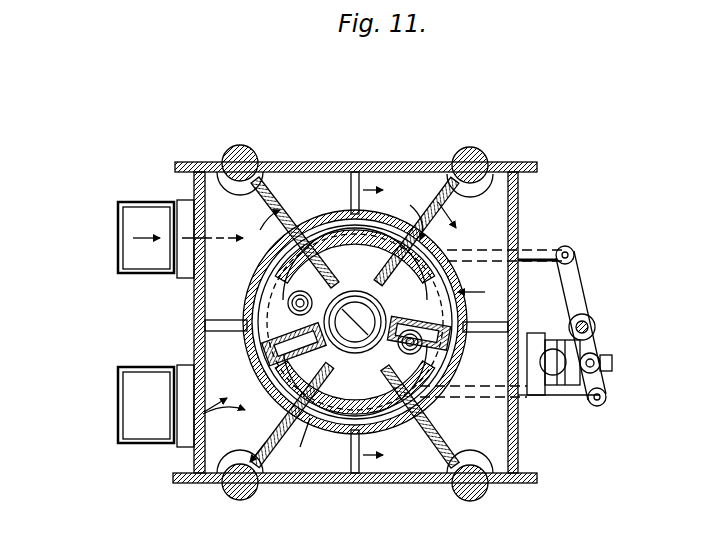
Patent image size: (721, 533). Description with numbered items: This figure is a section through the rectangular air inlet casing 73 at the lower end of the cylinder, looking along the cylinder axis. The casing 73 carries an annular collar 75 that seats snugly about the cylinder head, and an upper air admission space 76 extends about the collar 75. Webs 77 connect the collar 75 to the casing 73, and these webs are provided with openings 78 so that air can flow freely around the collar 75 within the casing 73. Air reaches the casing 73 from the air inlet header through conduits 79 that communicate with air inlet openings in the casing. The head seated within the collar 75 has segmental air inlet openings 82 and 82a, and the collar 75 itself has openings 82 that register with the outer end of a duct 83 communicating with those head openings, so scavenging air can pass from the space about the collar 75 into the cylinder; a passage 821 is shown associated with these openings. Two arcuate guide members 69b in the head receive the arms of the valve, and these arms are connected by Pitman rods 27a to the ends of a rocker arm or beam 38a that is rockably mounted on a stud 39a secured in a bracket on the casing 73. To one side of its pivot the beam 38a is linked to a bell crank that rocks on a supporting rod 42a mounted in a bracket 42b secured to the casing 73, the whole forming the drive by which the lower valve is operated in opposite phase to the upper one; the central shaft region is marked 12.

The shaft / flow path 12 is at (101, 228).
The annular collar 75 is at (378, 225).
The upper air admission space 76 is at (200, 293).
The webs 77 is at (292, 172).
The openings 78 is at (356, 193).
The conduits 79 is at (118, 268).
The segmental air inlet openings 82 is at (440, 298).
The valve block passage 821 is at (224, 394).
The segmental air inlet opening 82a is at (447, 252).
The duct 83 is at (200, 347).
The arcuate guide members 69b is at (356, 455).
The air inlet casing 73 is at (328, 484).
The Pitman rods 27a is at (535, 257).
The rocker arm or beam 38a is at (580, 288).
The stud 39a is at (592, 327).
The supporting rod 42a is at (572, 402).
The bracket 42b is at (527, 400).